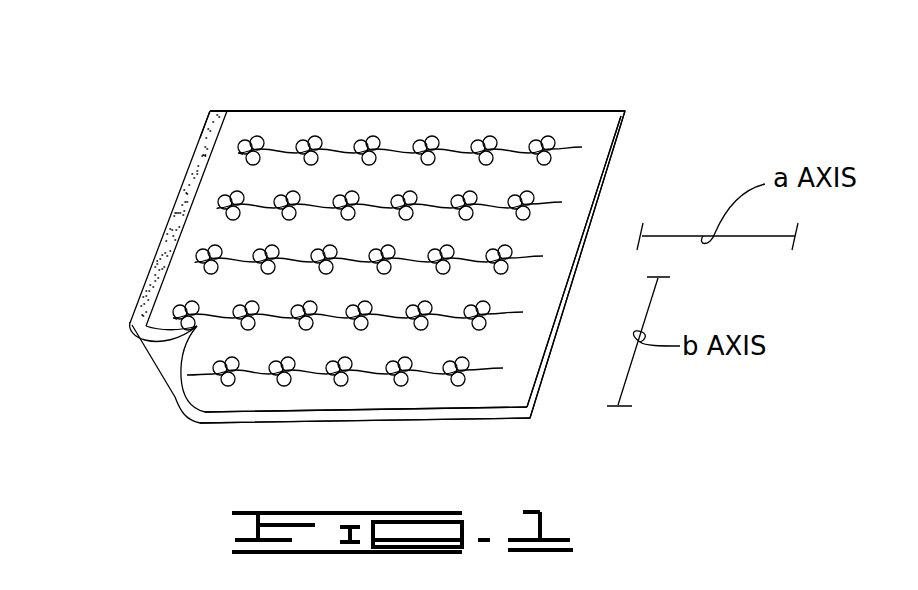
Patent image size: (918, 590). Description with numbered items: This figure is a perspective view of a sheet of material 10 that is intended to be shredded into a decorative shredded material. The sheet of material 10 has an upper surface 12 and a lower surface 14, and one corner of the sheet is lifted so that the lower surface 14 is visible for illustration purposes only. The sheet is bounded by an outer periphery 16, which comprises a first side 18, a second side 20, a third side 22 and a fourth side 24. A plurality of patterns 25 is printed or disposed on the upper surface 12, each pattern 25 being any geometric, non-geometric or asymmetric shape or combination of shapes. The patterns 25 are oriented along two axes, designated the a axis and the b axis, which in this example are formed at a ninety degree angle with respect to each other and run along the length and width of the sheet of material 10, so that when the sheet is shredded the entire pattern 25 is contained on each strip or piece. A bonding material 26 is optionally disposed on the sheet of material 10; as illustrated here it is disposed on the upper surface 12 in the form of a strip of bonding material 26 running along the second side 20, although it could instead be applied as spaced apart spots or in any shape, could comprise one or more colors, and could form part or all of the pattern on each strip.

The sheet of material 10 is at (528, 111).
The upper surface 12 is at (445, 122).
The lower surface 14 is at (157, 360).
The outer periphery 16 is at (278, 424).
The first side 18 is at (623, 143).
The second side 20 is at (173, 203).
The third side 22 is at (349, 111).
The fourth side 24 is at (421, 418).
The pattern 25 is at (251, 146).
The bonding material 26 is at (217, 110).